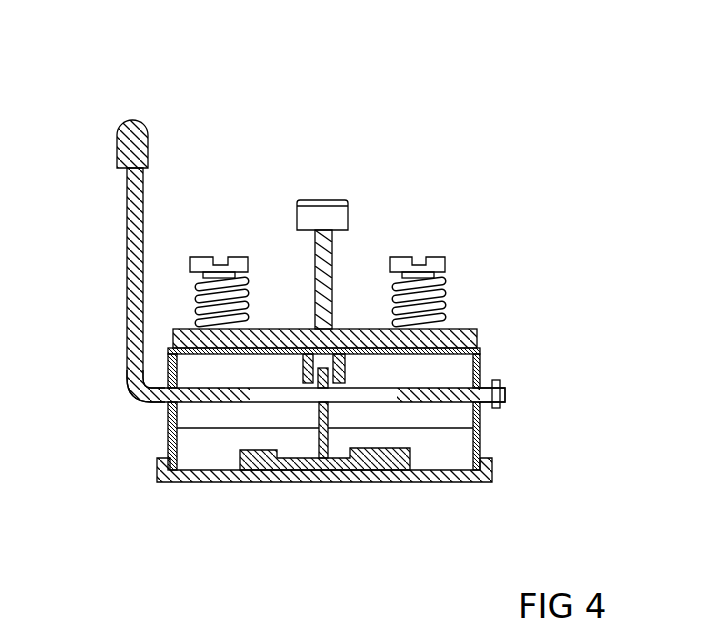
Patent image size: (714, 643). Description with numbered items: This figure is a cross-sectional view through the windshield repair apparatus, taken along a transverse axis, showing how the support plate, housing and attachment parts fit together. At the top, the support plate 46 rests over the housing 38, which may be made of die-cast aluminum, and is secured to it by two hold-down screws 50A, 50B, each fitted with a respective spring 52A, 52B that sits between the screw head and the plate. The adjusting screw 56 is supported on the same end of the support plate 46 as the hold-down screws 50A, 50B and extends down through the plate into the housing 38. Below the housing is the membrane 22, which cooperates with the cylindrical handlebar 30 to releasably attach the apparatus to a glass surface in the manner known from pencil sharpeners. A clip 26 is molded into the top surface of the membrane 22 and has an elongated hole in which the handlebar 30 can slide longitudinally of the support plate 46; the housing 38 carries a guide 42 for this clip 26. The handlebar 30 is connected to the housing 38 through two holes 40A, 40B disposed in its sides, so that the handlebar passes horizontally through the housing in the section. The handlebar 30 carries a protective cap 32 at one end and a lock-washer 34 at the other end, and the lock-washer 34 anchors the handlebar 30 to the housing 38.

The membrane 22 is at (250, 483).
The clip 26 is at (298, 485).
The cylindrical handlebar 30 is at (127, 292).
The protective cap 32 is at (117, 152).
The lock-washer 34 is at (493, 407).
The housing 38 is at (480, 365).
The hole 40A is at (158, 385).
The hole 40B is at (500, 367).
The guide 42 is at (345, 375).
The support plate 46 is at (477, 335).
The hold-down screw 50A is at (233, 257).
The hold-down screw 50B is at (428, 257).
The spring 52A is at (242, 285).
The spring 52B is at (445, 282).
The adjusting screw 56 is at (335, 200).